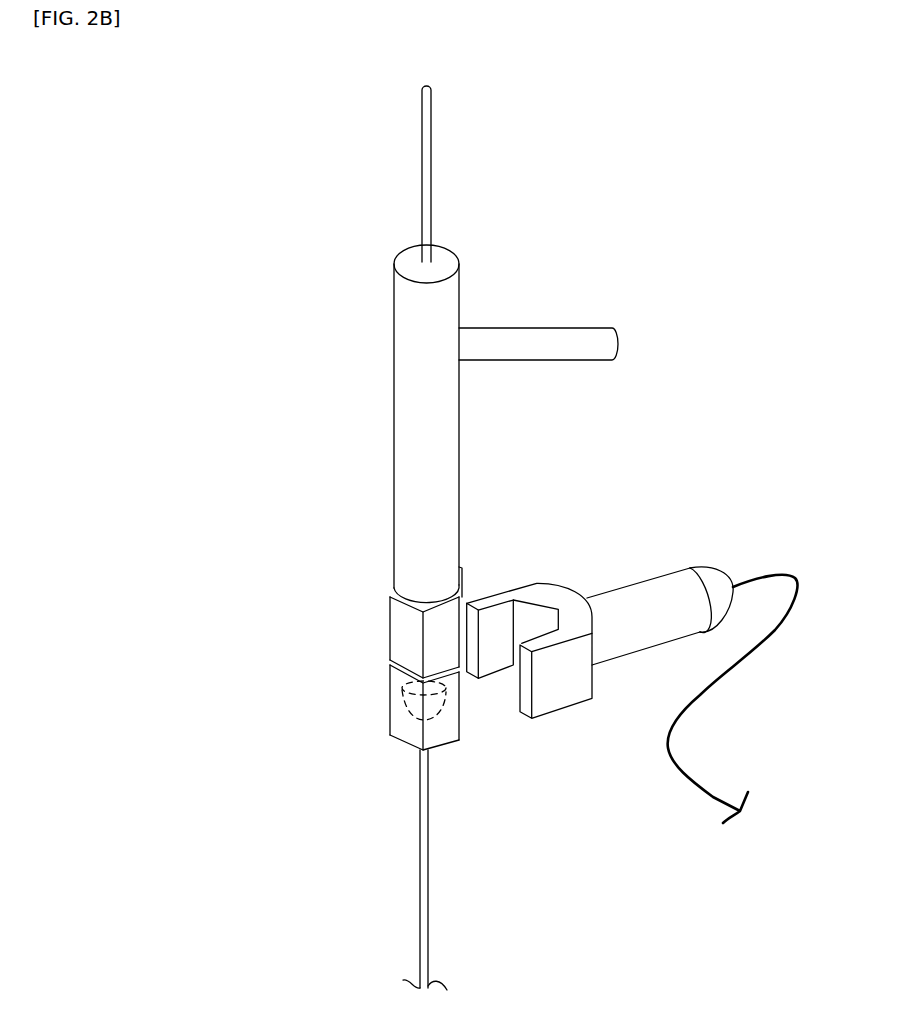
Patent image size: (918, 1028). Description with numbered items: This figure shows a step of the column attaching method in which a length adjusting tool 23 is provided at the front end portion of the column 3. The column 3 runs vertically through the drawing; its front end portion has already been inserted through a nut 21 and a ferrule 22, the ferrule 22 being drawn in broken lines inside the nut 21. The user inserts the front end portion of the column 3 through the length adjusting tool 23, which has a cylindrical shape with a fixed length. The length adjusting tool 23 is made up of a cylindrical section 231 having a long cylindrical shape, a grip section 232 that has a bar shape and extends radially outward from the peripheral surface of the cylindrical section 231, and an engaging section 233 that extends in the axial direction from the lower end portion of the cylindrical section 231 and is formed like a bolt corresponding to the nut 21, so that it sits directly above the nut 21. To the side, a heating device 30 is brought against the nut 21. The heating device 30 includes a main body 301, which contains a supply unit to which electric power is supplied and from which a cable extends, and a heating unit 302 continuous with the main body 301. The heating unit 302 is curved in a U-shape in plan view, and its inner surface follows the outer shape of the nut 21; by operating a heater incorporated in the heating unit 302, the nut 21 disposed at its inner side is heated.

The column 3 is at (420, 873).
The nut 21 is at (390, 716).
The ferrule 22 is at (390, 683).
The length adjusting tool 23 is at (462, 423).
The cylindrical section 231 is at (394, 370).
The grip section 232 is at (555, 328).
The engaging section 233 is at (390, 624).
The heating device 30 is at (667, 568).
The main body 301 is at (641, 655).
The heating unit 302 is at (555, 712).